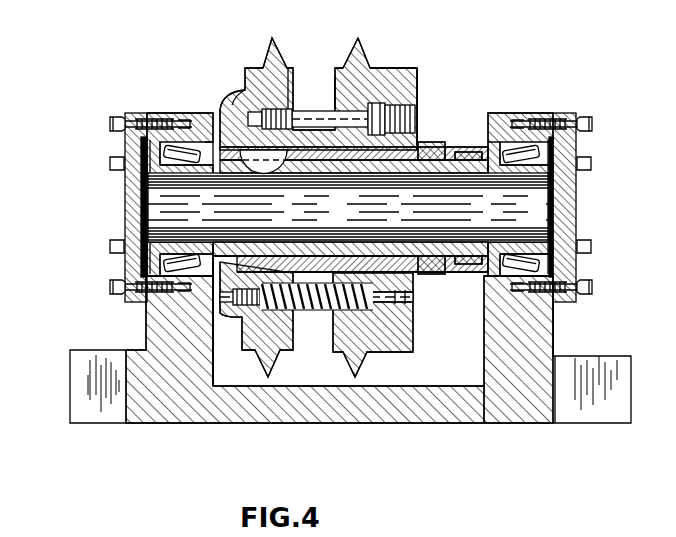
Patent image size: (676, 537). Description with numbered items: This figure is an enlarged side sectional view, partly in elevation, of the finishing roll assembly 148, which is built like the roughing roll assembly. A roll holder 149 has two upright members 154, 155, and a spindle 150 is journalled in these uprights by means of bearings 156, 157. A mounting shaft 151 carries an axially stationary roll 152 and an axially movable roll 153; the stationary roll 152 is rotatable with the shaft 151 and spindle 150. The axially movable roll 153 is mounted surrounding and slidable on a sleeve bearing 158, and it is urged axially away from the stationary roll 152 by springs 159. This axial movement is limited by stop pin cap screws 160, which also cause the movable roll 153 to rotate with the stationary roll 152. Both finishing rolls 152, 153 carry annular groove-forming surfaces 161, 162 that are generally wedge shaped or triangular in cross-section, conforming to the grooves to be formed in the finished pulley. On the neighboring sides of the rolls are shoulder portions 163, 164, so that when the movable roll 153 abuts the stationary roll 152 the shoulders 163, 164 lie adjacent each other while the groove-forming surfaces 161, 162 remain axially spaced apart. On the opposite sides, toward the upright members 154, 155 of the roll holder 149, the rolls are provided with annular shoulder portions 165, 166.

The finishing roll assembly 148 is at (162, 103).
The roll holder 149 is at (165, 377).
The spindle 150 is at (163, 199).
The mounting shaft 151 is at (424, 147).
The axially stationary roll 152 is at (256, 92).
The axially movable roll 153 is at (406, 70).
The upright member 154 is at (163, 317).
The upright member 155 is at (534, 328).
The bearing 156 is at (124, 139).
The bearing 157 is at (579, 142).
The sleeve bearing 158 is at (392, 146).
The spring 159 is at (308, 314).
The stop pin cap screw 160 is at (312, 112).
The groove-forming surface 161 is at (268, 45).
The groove-forming surface 162 is at (366, 50).
The shoulder portion 163 is at (287, 70).
The shoulder portion 164 is at (341, 58).
The annular shoulder portion 165 is at (262, 62).
The annular shoulder portion 166 is at (384, 70).